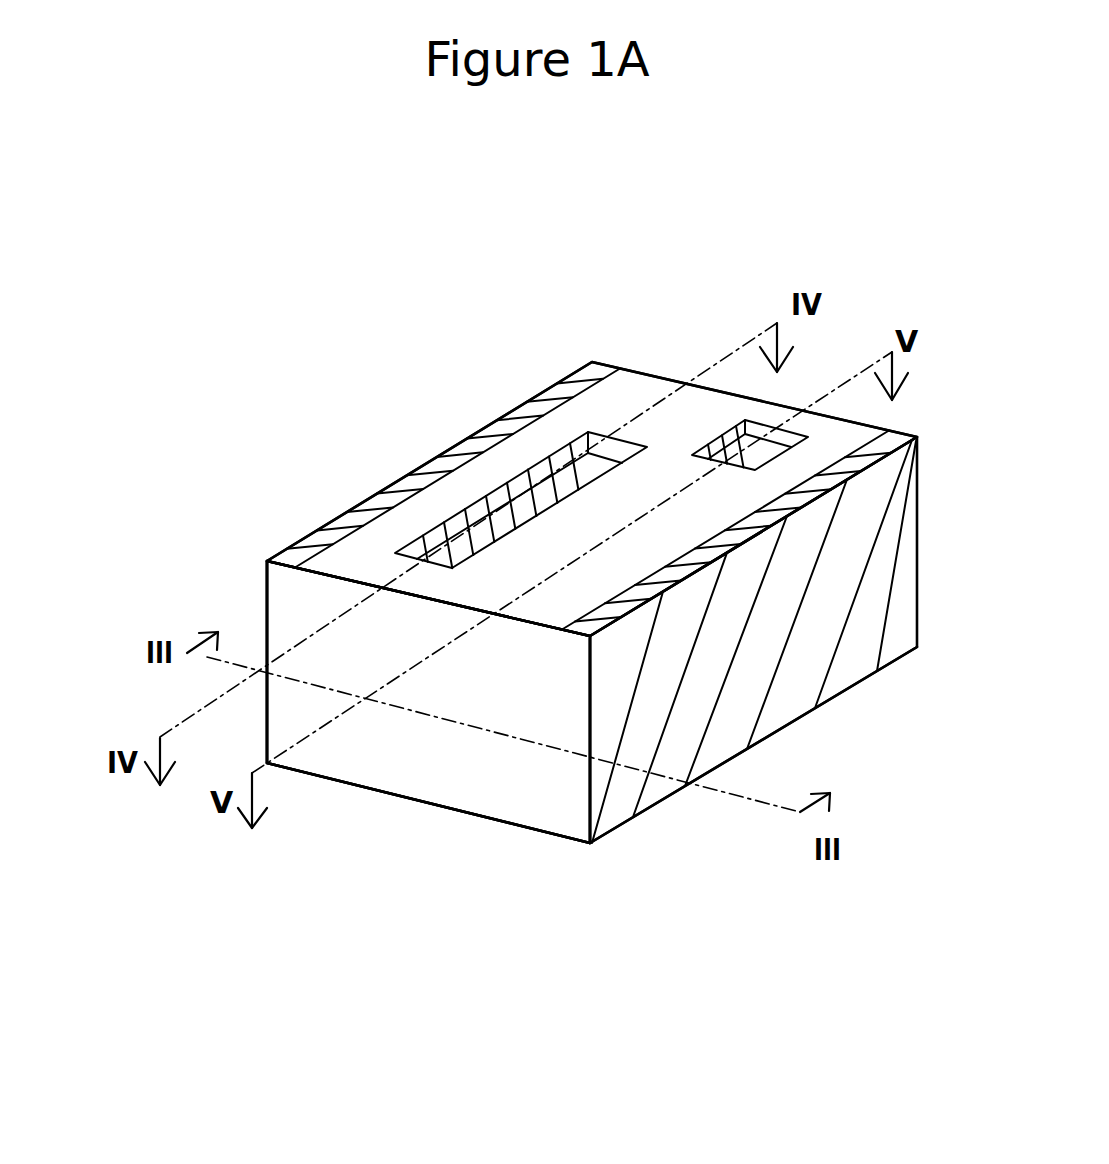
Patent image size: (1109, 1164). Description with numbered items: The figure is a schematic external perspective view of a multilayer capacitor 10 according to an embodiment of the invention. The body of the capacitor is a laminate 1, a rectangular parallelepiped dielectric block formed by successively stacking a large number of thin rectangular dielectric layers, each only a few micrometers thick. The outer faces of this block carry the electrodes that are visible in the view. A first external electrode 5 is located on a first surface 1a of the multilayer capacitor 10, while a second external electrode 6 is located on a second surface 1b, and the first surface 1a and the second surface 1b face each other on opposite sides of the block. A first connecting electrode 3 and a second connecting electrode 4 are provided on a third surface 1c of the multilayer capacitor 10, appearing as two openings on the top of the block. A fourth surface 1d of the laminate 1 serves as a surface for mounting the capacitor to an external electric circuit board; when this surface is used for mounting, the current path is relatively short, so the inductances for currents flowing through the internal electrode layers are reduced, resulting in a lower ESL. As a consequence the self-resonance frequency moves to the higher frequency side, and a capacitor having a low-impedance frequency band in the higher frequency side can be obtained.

The laminate 1 is at (370, 790).
The first surface 1a is at (643, 788).
The second surface 1b is at (283, 607).
The third surface 1c is at (362, 560).
The fourth surface 1d is at (472, 798).
The first connecting electrode 3 is at (603, 433).
The second connecting electrode 4 is at (757, 424).
The first external electrode 5 is at (870, 647).
The second external electrode 6 is at (430, 460).
The multilayer capacitor 10 is at (552, 858).